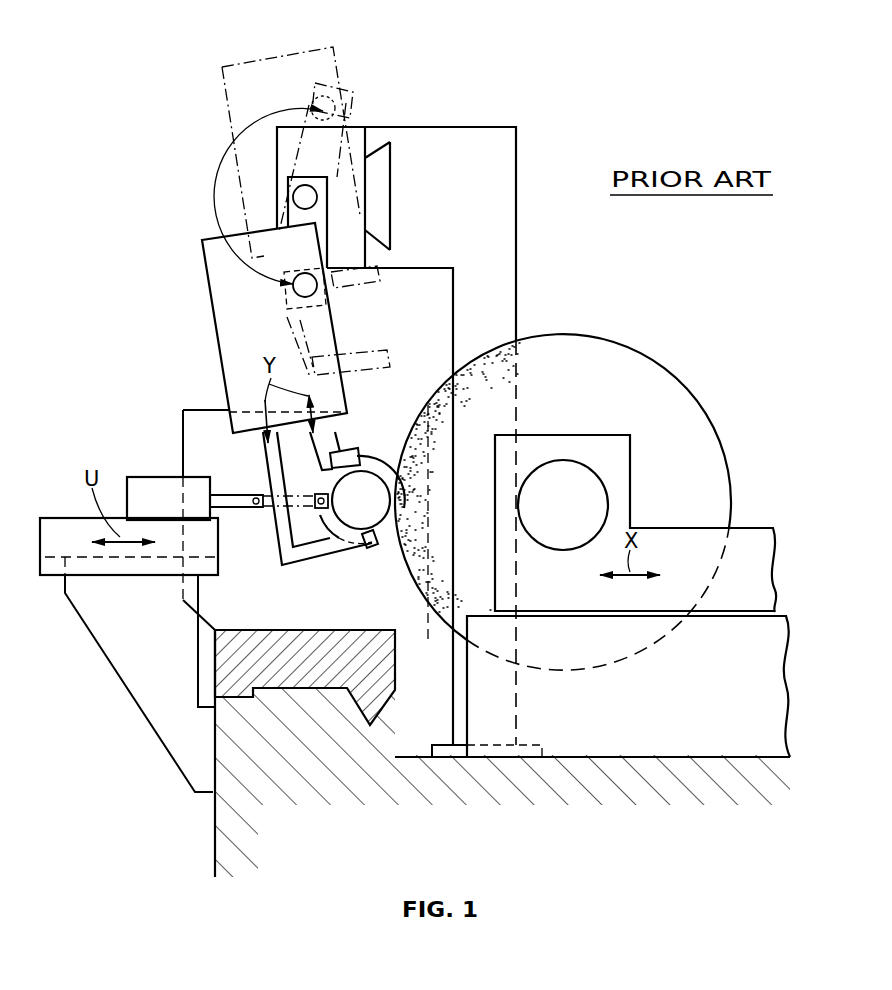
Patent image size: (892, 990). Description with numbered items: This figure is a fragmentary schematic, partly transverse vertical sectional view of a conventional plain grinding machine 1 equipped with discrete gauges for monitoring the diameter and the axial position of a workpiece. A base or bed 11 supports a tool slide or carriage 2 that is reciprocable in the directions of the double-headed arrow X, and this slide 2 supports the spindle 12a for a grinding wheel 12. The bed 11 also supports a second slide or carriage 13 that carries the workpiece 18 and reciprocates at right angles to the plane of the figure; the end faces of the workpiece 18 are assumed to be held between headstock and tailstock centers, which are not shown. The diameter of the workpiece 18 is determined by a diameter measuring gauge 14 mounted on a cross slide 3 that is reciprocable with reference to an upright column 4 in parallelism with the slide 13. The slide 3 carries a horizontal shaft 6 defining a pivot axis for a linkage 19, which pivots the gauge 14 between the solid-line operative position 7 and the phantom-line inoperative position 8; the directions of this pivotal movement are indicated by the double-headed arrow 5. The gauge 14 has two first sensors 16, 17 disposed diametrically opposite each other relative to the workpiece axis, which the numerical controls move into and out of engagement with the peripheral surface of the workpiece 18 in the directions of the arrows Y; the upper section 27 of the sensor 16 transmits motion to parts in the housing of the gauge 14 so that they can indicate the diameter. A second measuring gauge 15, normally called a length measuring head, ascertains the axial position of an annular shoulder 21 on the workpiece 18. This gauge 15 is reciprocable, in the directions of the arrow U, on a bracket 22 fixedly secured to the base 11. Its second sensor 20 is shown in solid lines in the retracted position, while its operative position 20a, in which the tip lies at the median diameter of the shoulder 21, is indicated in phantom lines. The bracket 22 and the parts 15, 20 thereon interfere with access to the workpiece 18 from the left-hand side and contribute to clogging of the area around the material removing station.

The plain grinding machine 1 is at (578, 137).
The tool slide 2 is at (628, 574).
The cross slide 3 is at (273, 199).
The upright column 4 is at (508, 197).
The double-headed arrow 5 is at (220, 220).
The horizontal shaft 6 is at (293, 197).
The operative position 7 is at (163, 345).
The inoperative position 8 is at (163, 103).
The bed 11 is at (215, 826).
The grinding wheel 12 is at (620, 358).
The spindle 12a is at (571, 470).
The second slide 13 is at (386, 668).
The diameter measuring gauge 14 is at (220, 292).
The second measuring gauge 15 is at (150, 489).
The first sensor 16 is at (338, 450).
The first sensor 17 is at (323, 553).
The workpiece 18 is at (378, 513).
The linkage 19 is at (328, 207).
The second sensor 20 is at (238, 509).
The operative position of sensor 20a is at (295, 492).
The annular shoulder 21 is at (323, 521).
The bracket 22 is at (110, 638).
The upper section of sensor 27 is at (325, 442).